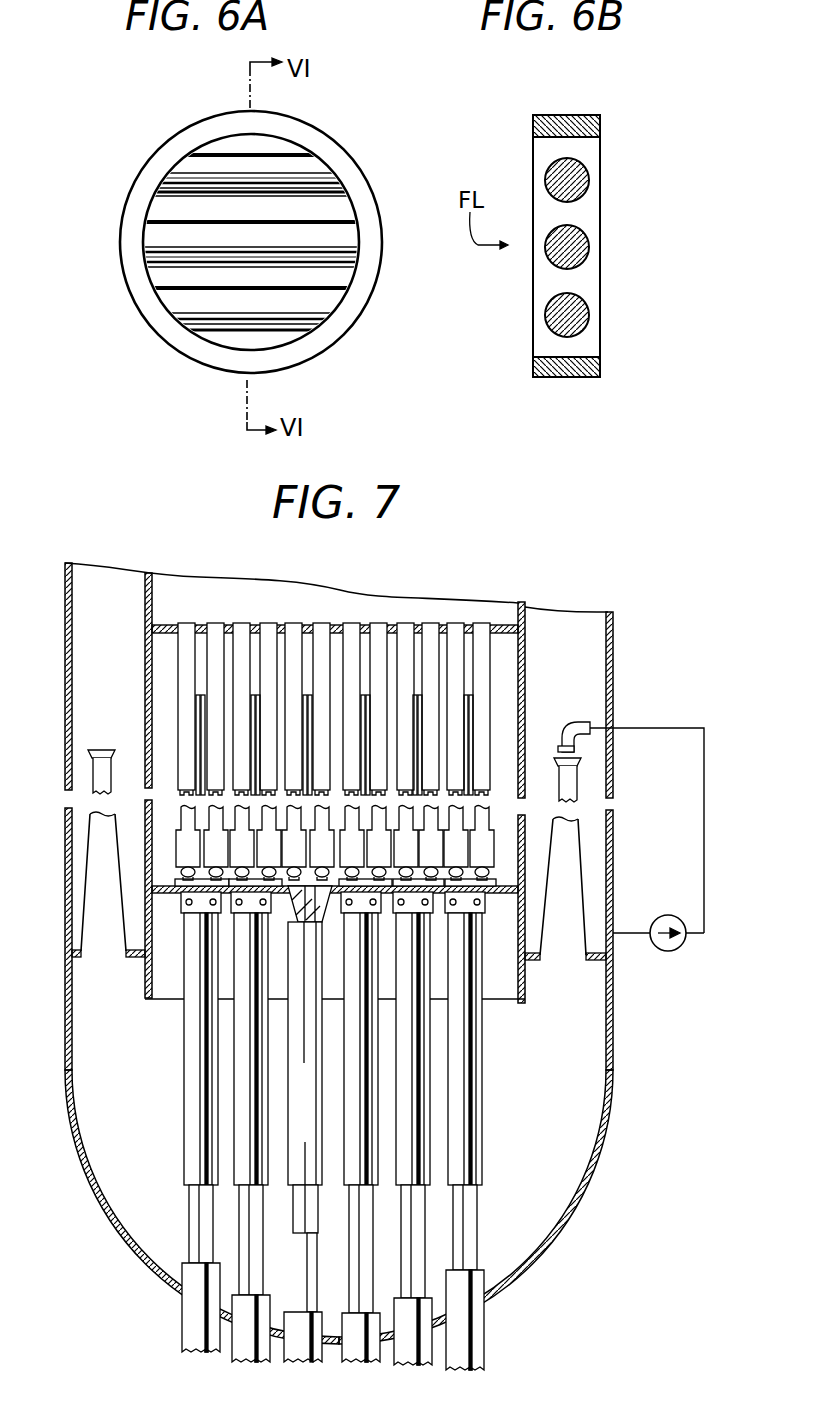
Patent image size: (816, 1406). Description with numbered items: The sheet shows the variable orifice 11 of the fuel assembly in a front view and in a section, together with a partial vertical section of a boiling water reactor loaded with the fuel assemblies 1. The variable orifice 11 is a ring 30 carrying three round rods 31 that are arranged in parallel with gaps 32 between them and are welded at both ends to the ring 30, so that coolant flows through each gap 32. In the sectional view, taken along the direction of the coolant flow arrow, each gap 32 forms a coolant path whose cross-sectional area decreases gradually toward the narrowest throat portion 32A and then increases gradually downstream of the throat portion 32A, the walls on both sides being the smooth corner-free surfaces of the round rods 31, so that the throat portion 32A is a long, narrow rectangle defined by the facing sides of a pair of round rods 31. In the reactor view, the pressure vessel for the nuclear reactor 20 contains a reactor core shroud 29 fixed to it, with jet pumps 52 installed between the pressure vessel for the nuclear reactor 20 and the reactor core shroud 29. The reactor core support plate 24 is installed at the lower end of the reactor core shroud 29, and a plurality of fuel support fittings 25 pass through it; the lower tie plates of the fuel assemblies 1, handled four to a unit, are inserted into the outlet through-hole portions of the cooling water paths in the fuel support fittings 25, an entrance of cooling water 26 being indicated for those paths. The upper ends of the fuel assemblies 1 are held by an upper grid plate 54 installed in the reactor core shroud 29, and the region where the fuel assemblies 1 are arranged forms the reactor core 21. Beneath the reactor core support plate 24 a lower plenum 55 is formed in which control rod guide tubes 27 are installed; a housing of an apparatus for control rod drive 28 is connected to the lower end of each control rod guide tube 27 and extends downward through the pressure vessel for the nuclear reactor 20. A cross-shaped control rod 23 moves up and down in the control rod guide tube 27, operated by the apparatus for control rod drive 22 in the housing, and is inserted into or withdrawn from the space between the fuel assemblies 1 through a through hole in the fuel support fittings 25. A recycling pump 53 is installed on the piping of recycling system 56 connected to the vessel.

In FIG. 7, the fuel assembly 1 is at (455, 682).
In FIG. 6A, the variable orifice 11 is at (152, 146).
In FIG. 6B, the variable orifice 11 is at (612, 176).
In FIG. 7, the pressure vessel for a nuclear reactor 20 is at (613, 1058).
In FIG. 7, the reactor core 21 is at (352, 668).
In FIG. 7, the apparatus for control rod drive 22 is at (303, 1213).
In FIG. 7, the control rod 23 is at (478, 832).
In FIG. 7, the reactor core support plate 24 is at (173, 892).
In FIG. 7, the fuel support fitting 25 is at (458, 908).
In FIG. 7, the entrance of cooling water 26 is at (483, 950).
In FIG. 7, the control rod guide tube 27 is at (460, 1113).
In FIG. 7, the housing of an apparatus for control rod drive 28 is at (460, 1213).
In FIG. 7, the reactor core shroud 29 is at (482, 835).
In FIG. 6A, the ring 30 is at (330, 153).
In FIG. 6B, the ring 30 is at (593, 128).
In FIG. 6A, the round rod 31 is at (177, 303).
In FIG. 6B, the round rod 31 is at (577, 320).
In FIG. 6A, the gap 32 is at (335, 280).
In FIG. 6B, the gap 32 is at (580, 283).
In FIG. 6B, the throat portion 32A is at (573, 203).
In FIG. 7, the jet pump 52 is at (586, 896).
In FIG. 7, the recycling pump 53 is at (672, 950).
In FIG. 7, the upper grid plate 54 is at (169, 626).
In FIG. 7, the lower plenum 55 is at (103, 1132).
In FIG. 7, the piping of recycling system 56 is at (704, 850).